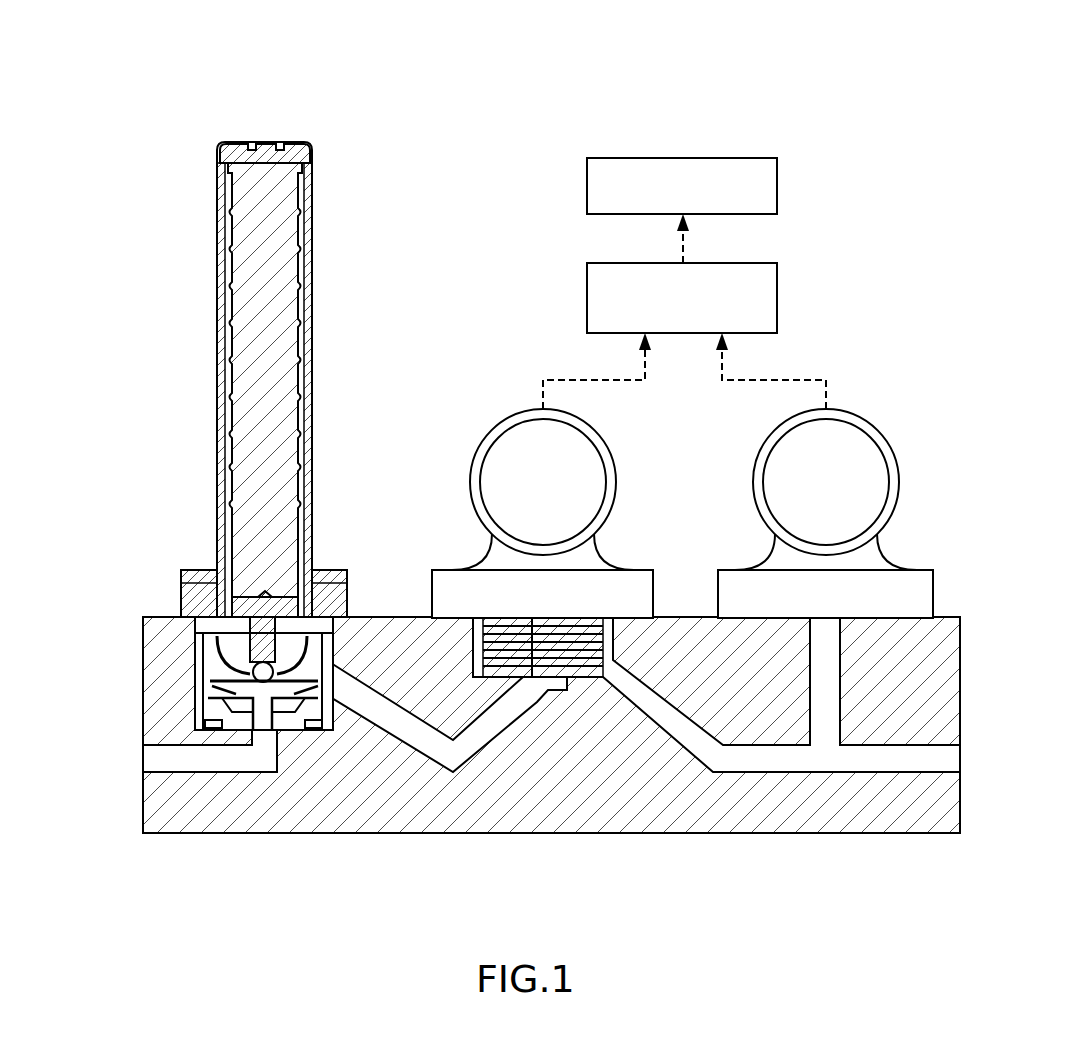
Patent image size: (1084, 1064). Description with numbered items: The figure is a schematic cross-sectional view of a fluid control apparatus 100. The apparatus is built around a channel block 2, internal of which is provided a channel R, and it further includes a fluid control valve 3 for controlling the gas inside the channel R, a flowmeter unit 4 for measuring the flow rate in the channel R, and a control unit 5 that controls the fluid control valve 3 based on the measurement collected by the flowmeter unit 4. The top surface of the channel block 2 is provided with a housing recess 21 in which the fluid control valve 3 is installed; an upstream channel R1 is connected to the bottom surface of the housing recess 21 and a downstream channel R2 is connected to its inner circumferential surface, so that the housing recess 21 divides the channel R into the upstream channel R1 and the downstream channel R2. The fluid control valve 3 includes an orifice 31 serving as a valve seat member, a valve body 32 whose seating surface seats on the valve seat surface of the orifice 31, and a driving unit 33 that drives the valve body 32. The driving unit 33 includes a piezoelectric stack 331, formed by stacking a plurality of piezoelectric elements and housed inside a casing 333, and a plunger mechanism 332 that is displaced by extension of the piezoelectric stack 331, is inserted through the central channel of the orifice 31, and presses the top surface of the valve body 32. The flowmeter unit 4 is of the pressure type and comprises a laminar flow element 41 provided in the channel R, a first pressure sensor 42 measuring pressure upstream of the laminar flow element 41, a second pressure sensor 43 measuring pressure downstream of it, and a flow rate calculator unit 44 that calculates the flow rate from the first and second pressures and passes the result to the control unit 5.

The fluid control apparatus 100 is at (372, 58).
The channel block 2 is at (382, 616).
The fluid control valve 3 is at (128, 348).
The flowmeter unit 4 is at (535, 337).
The control unit 5 is at (778, 186).
The housing recess 21 is at (200, 681).
The orifice 31 is at (210, 665).
The valve body 32 is at (215, 716).
The driving unit 33 is at (196, 379).
The piezoelectric stack 331 is at (232, 488).
The plunger mechanism 332 is at (220, 580).
The casing 333 is at (217, 437).
The laminar flow element 41 is at (615, 645).
The first pressure sensor 42 is at (505, 418).
The second pressure sensor 43 is at (862, 418).
The flow rate calculator unit 44 is at (778, 300).
The channel R is at (355, 796).
The upstream channel R1 is at (234, 760).
The downstream channel R2 is at (445, 744).